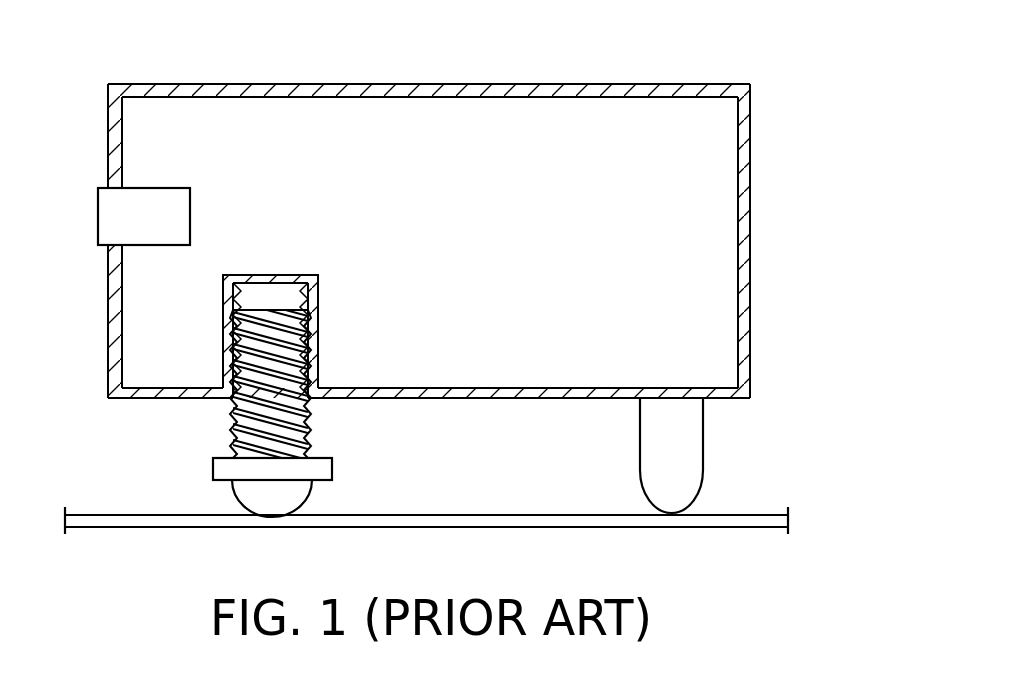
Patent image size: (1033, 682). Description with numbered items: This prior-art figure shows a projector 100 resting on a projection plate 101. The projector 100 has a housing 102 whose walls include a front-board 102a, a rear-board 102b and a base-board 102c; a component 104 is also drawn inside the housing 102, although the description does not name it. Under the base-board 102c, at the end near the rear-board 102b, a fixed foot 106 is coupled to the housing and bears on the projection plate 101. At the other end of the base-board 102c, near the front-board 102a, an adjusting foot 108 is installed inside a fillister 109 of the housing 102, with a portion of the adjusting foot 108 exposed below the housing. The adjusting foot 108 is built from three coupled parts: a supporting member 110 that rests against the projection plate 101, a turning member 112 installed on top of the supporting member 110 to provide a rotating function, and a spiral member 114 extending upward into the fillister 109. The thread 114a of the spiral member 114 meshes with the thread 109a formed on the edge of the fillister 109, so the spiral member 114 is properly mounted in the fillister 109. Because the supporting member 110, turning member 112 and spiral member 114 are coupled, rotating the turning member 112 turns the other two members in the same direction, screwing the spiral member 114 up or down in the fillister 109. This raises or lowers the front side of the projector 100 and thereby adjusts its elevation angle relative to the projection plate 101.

The projector 100 is at (793, 37).
The projection plate 101 is at (548, 516).
The housing 102 is at (441, 81).
The front-board 102a is at (109, 121).
The rear-board 102b is at (742, 190).
The base-board 102c is at (503, 398).
The internal component 104 is at (104, 212).
The fixed foot 106 is at (690, 453).
The adjusting foot 108 is at (213, 433).
The fillister 109 is at (275, 288).
The thread of the edge of the fillister 109a is at (320, 297).
The supporting member 110 is at (299, 494).
The turning member 112 is at (333, 472).
The spiral member 114 is at (308, 418).
The thread of the spiral member 114a is at (320, 332).